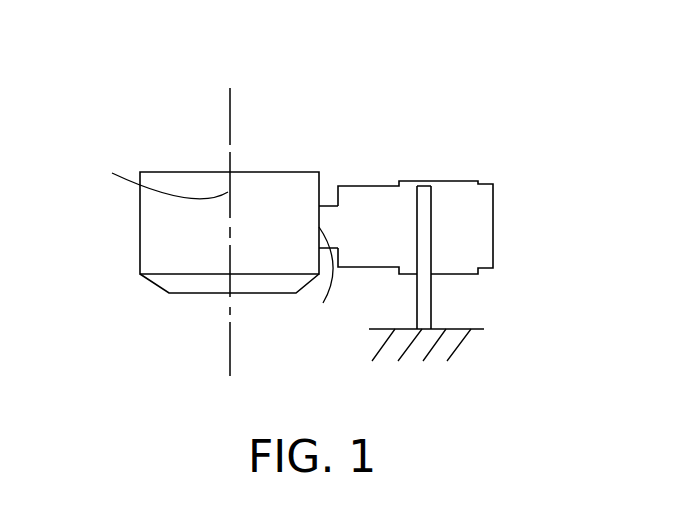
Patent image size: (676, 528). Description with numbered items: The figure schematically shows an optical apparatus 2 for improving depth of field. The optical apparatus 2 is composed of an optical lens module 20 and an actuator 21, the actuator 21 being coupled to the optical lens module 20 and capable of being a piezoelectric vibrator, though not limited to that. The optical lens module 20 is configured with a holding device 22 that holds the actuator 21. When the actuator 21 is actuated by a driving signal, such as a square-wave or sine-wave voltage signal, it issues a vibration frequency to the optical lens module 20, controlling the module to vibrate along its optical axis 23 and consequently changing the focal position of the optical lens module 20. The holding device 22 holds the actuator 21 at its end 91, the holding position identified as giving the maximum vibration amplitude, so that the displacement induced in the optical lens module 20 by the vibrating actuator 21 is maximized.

The optical apparatus 2 is at (165, 104).
The optical lens module 20 is at (310, 180).
The actuator 21 is at (378, 190).
The holding device 22 is at (428, 293).
The optical axis 23 is at (156, 175).
The end of the actuator 91 is at (322, 282).